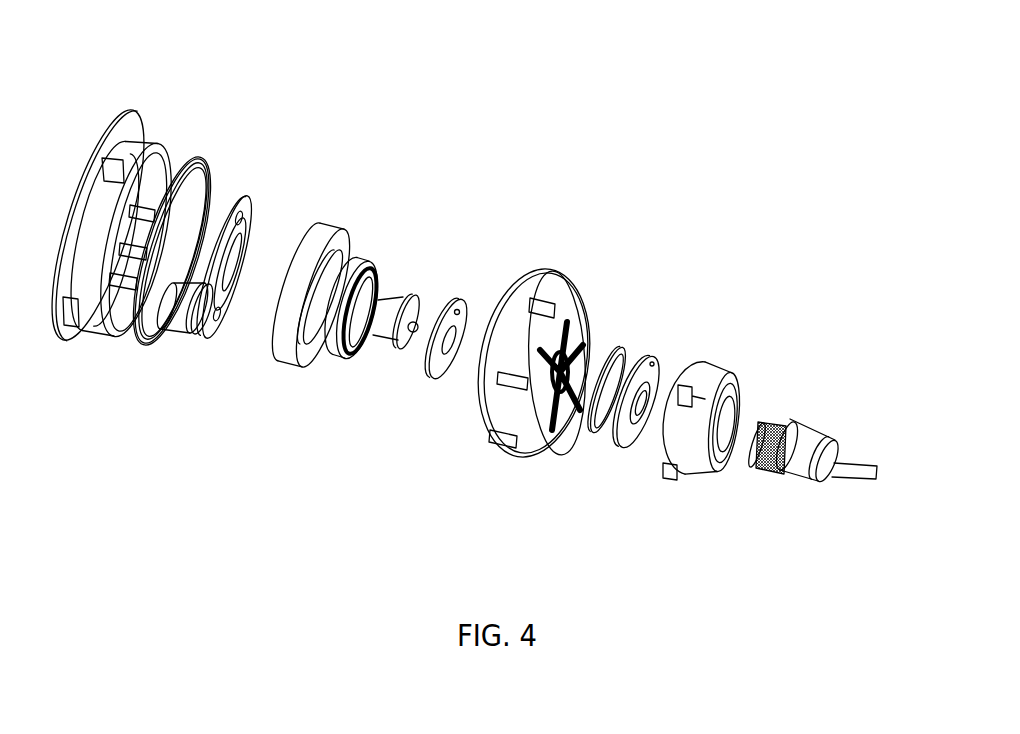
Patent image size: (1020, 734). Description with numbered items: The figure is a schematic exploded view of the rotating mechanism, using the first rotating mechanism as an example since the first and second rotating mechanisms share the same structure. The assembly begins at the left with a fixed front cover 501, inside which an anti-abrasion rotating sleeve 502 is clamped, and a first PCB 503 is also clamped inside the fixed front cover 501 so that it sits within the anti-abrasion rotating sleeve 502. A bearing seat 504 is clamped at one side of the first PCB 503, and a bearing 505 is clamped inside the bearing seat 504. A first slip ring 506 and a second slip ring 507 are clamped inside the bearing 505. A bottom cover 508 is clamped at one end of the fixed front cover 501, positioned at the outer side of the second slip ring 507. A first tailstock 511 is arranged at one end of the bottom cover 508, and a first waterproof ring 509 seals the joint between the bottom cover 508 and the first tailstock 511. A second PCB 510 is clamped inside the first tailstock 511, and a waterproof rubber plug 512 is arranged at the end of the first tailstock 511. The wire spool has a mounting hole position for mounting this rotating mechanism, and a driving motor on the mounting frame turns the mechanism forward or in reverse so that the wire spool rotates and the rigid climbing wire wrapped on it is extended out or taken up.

The fixed front cover 501 is at (133, 157).
The anti-abrasion rotating sleeve 502 is at (143, 340).
The first PCB 503 is at (255, 203).
The bearing seat 504 is at (325, 237).
The bearing 505 is at (367, 272).
The first slip ring 506 is at (393, 308).
The second slip ring 507 is at (440, 375).
The bottom cover 508 is at (587, 298).
The first waterproof ring 509 is at (623, 350).
The second PCB 510 is at (623, 440).
The first tailstock 511 is at (712, 373).
The waterproof rubber plug 512 is at (813, 425).